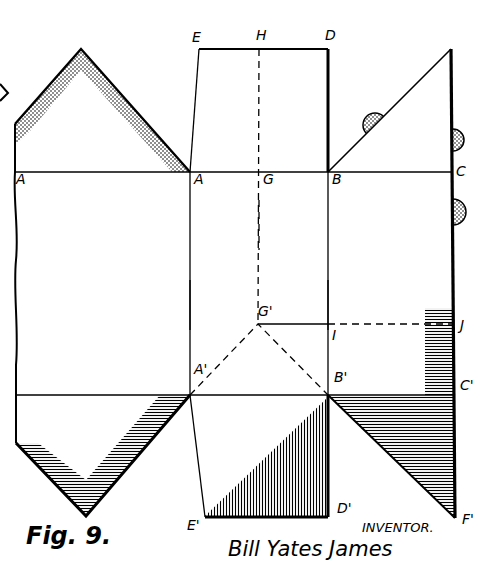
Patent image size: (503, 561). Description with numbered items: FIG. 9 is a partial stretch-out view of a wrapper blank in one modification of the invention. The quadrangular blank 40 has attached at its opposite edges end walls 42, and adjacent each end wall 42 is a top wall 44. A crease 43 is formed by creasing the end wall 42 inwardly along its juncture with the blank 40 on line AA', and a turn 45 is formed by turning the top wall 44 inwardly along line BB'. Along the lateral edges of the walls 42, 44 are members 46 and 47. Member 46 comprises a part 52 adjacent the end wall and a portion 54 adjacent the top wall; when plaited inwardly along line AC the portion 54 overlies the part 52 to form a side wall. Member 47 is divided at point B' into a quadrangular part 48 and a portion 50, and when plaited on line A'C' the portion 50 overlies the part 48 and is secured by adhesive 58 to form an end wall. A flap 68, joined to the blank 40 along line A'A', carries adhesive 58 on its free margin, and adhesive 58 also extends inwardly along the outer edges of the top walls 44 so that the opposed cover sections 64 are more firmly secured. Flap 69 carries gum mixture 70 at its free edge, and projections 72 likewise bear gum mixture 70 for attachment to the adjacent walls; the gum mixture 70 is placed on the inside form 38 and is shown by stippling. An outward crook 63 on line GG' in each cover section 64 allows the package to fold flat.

The member 46 is at (372, 21).
The part 52 is at (263, 110).
The portion 54 is at (389, 110).
The gum mixture 70 is at (138, 116).
The projections 72 is at (382, 112).
The flap 69 is at (102, 110).
The quadrangular blank 40 is at (103, 283).
The end walls 42 is at (259, 283).
The crease 43 is at (192, 304).
The outward crook 63 is at (259, 222).
The top walls 44 is at (390, 283).
The turn 45 is at (328, 300).
The cover sections 64 is at (469, 287).
The adhesive 58 is at (443, 366).
The portion 50 is at (383, 448).
The flap 68 is at (103, 455).
The inside form 38 is at (119, 478).
The quadrangular part 48 is at (259, 456).
The member 47 is at (352, 523).